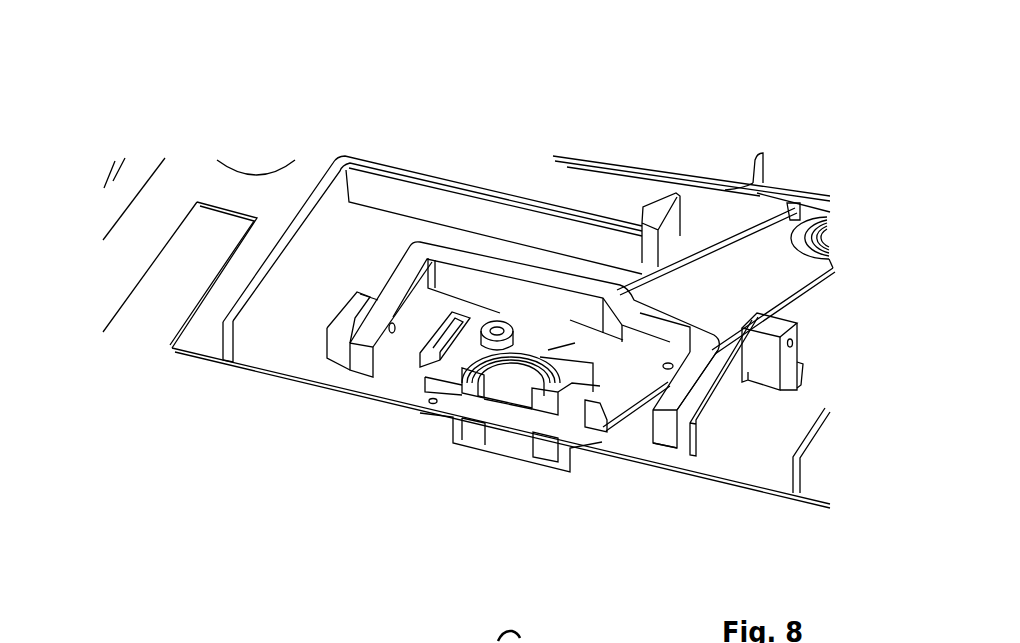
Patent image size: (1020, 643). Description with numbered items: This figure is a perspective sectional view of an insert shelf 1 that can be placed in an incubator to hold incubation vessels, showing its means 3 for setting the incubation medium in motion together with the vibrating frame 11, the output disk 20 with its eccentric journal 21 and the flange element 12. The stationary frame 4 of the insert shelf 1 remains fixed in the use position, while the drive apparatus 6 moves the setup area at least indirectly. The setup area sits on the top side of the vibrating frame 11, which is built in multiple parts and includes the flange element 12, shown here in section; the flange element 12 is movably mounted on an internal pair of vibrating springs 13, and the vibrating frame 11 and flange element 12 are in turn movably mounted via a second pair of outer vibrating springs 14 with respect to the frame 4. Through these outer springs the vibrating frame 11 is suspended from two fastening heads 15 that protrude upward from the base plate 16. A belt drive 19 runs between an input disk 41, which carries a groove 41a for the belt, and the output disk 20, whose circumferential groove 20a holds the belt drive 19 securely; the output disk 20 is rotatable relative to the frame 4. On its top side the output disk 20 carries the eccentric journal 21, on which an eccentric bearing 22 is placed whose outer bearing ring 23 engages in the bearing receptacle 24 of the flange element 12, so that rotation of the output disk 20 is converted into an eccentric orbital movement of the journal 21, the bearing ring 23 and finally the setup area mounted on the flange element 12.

The insert shelf 1 is at (77, 402).
The means for setting the incubation medium in motion 3 is at (705, 278).
The frame 4 is at (183, 183).
The drive apparatus 6 is at (655, 280).
The vibrating frame 11 is at (680, 415).
The flange element 12 is at (418, 368).
The pair of vibrating springs 13 is at (547, 373).
The second pair of vibrating springs 14 is at (753, 358).
The fastening heads 15 is at (770, 353).
The base plate 16 is at (355, 236).
The belt drive 19 is at (696, 242).
The output disk 20 is at (572, 447).
The groove 20a is at (590, 430).
The eccentric journal 21 is at (505, 387).
The eccentric bearing 22 is at (552, 360).
The outer bearing ring 23 is at (470, 363).
The bearing receptacle 24 is at (521, 352).
The input disk 41 is at (825, 217).
The groove 41a is at (829, 259).